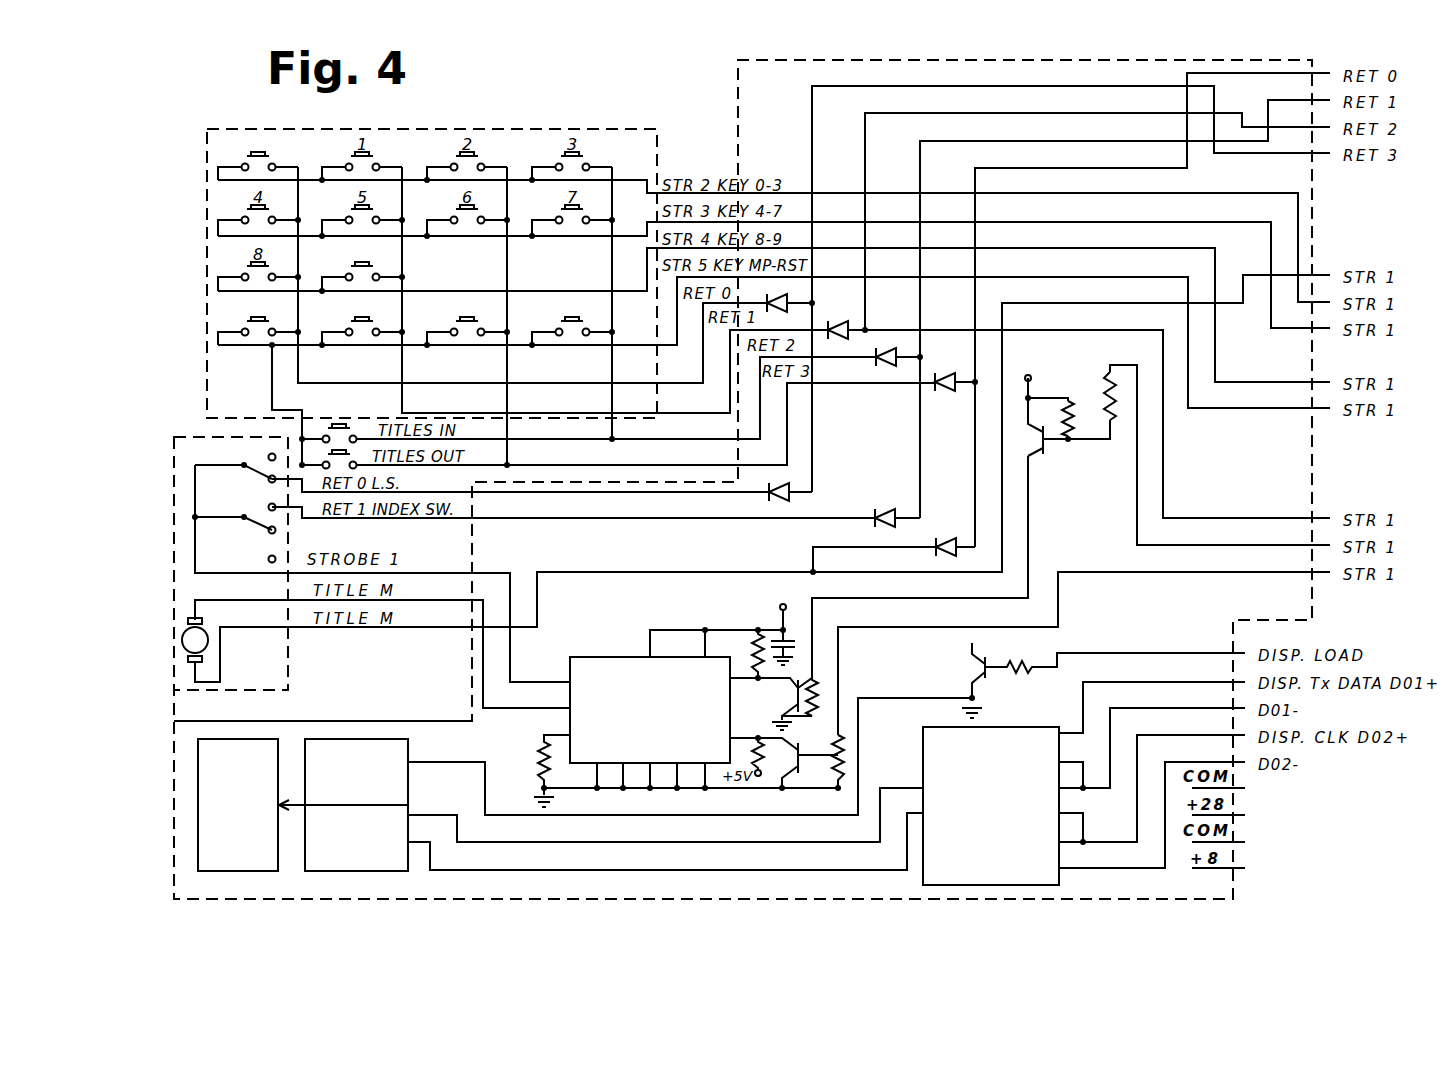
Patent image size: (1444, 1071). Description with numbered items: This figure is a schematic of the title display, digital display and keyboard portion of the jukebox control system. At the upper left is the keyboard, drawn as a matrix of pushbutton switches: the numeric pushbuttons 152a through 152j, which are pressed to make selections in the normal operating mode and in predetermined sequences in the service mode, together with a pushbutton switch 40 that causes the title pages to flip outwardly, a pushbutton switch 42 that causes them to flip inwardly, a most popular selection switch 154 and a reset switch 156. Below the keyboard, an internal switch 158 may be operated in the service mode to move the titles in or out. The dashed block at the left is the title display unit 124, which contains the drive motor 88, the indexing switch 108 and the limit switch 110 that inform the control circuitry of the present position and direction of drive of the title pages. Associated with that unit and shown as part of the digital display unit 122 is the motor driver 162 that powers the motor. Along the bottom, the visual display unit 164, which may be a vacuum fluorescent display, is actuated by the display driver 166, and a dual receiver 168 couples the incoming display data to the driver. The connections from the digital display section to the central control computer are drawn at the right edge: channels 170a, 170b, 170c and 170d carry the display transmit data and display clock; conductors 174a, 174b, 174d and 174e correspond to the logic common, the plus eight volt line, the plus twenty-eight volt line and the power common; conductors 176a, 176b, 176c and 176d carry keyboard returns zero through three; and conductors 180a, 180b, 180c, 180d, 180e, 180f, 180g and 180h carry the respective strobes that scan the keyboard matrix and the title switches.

The numeric pushbutton 152a is at (268, 156).
The numeric pushbutton 152j is at (355, 263).
The most popular selection switch 154 is at (243, 328).
The reset switch 156 is at (351, 318).
The pushbutton switch 40 is at (457, 318).
The pushbutton switch 42 is at (561, 318).
The internal switch 158 is at (333, 421).
The title display unit 124 is at (182, 436).
The limit switch 110 is at (258, 474).
The indexing switch 108 is at (258, 528).
The drive motor 88 is at (206, 636).
The visual display unit 164 is at (242, 739).
The digital display unit 122 is at (350, 739).
The display driver 166 is at (410, 752).
The motor driver 162 is at (625, 656).
The dual receiver 168 is at (1010, 727).
The channel 170a is at (1170, 682).
The channel 170b is at (1185, 708).
The channel 170c is at (1195, 735).
The channel 170d is at (1220, 762).
The conductor 174d is at (1240, 790).
The conductor 174e is at (1240, 817).
The conductor 174a is at (1240, 844).
The conductor 174b is at (1240, 870).
The keyboard return conductor 176a is at (1005, 168).
The keyboard return conductor 176b is at (950, 141).
The keyboard return conductor 176c is at (905, 113).
The keyboard return conductor 176d is at (835, 86).
The strobe conductor 180a is at (1045, 303).
The strobe conductor 180b is at (1045, 193).
The strobe conductor 180c is at (1005, 222).
The strobe conductor 180d is at (1045, 248).
The strobe conductor 180e is at (1005, 277).
The strobe conductor 180f is at (1232, 518).
The strobe conductor 180g is at (1190, 545).
The strobe conductor 180h is at (1103, 572).